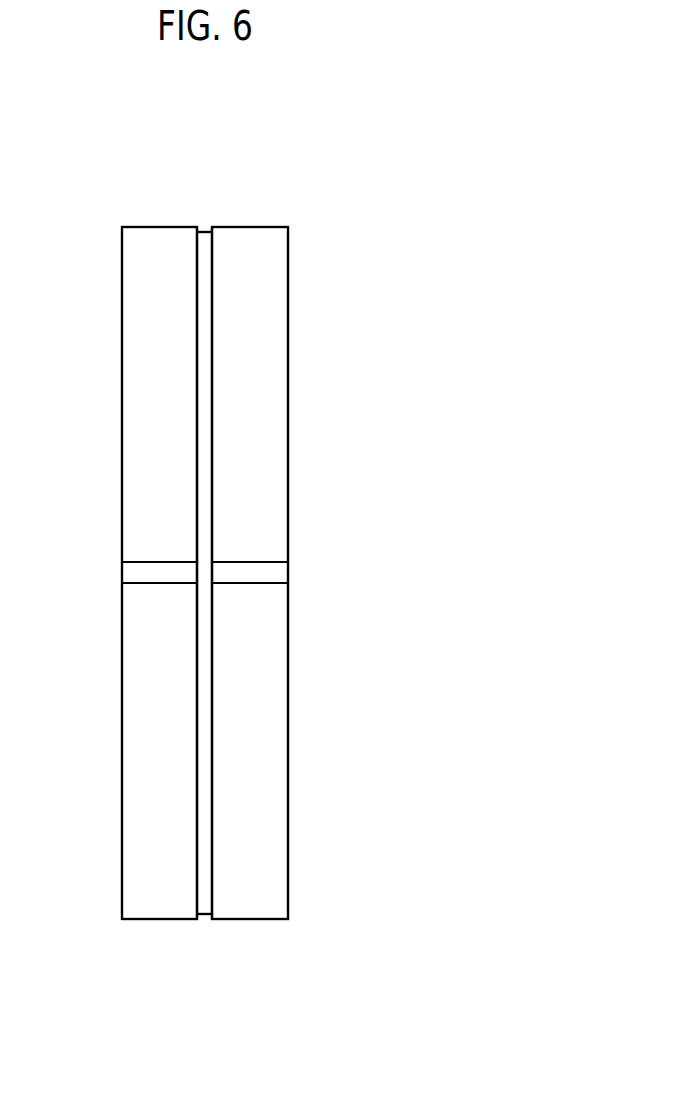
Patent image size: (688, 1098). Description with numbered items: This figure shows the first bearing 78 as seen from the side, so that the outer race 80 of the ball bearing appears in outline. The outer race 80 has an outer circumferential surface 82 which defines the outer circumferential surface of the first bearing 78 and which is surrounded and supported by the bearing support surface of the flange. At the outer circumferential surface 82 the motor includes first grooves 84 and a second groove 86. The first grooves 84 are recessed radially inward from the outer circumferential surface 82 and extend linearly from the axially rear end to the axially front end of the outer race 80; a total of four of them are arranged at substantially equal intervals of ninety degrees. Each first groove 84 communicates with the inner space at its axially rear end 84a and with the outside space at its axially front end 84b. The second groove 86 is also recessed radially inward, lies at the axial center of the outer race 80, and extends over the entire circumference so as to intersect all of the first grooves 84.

The first bearing 78 is at (466, 118).
The outer race 80 is at (247, 228).
The outer circumferential surface 82 is at (250, 385).
The first grooves 84 is at (243, 562).
The axially rear ends 84a is at (288, 572).
The axially front ends 84b is at (122, 572).
The second groove 86 is at (213, 281).